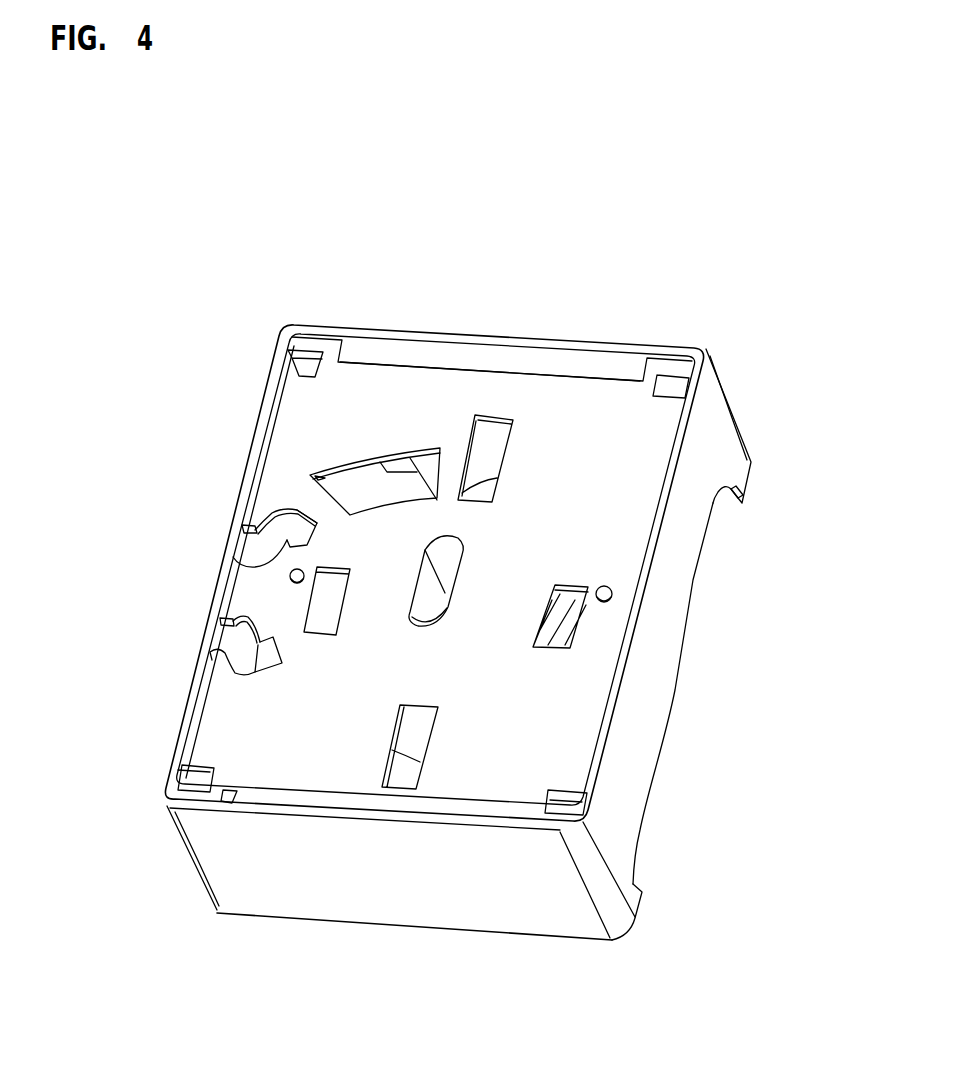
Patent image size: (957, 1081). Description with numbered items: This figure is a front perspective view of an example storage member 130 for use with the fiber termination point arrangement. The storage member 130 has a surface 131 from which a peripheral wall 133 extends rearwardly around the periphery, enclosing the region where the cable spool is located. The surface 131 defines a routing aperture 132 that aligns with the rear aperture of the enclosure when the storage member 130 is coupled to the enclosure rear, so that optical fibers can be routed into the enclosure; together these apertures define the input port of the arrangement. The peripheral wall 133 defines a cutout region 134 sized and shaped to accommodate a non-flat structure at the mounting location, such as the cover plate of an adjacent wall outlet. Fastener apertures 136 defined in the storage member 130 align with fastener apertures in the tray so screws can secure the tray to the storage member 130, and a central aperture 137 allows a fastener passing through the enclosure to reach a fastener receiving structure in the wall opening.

The storage member 130 is at (264, 398).
The surface 131 is at (622, 462).
The routing aperture 132 is at (352, 462).
The peripheral wall 133 is at (702, 427).
The cutout region 134 is at (705, 551).
The fastener aperture 136 is at (292, 577).
The central aperture 137 is at (423, 597).